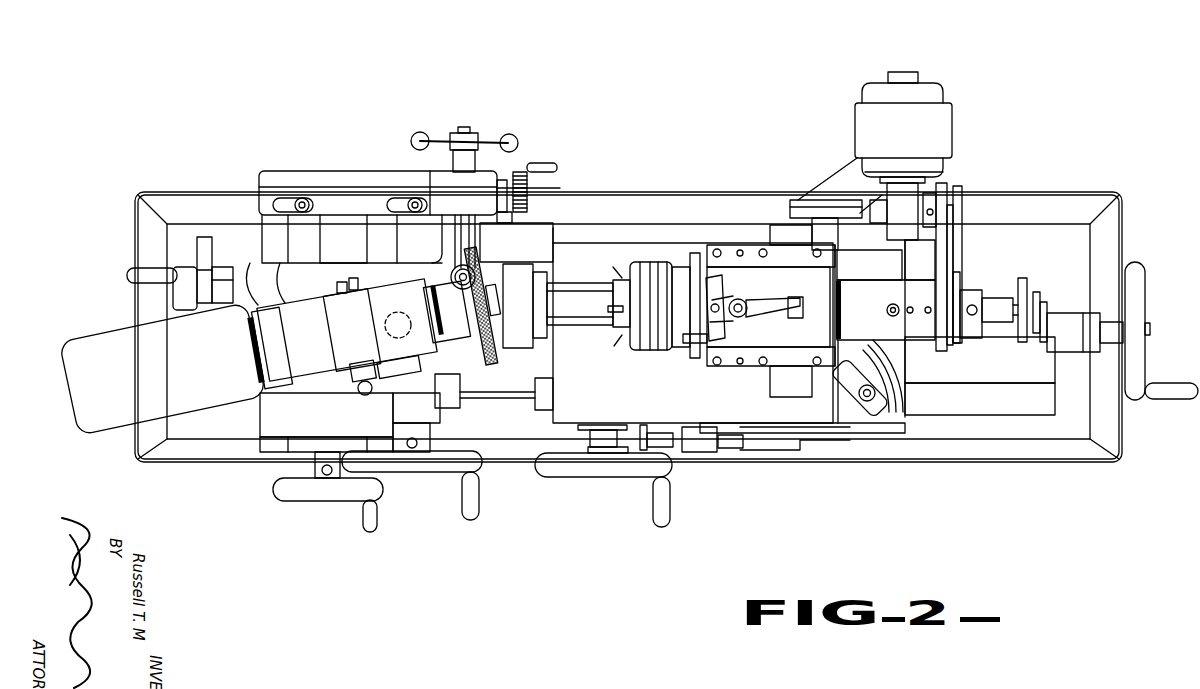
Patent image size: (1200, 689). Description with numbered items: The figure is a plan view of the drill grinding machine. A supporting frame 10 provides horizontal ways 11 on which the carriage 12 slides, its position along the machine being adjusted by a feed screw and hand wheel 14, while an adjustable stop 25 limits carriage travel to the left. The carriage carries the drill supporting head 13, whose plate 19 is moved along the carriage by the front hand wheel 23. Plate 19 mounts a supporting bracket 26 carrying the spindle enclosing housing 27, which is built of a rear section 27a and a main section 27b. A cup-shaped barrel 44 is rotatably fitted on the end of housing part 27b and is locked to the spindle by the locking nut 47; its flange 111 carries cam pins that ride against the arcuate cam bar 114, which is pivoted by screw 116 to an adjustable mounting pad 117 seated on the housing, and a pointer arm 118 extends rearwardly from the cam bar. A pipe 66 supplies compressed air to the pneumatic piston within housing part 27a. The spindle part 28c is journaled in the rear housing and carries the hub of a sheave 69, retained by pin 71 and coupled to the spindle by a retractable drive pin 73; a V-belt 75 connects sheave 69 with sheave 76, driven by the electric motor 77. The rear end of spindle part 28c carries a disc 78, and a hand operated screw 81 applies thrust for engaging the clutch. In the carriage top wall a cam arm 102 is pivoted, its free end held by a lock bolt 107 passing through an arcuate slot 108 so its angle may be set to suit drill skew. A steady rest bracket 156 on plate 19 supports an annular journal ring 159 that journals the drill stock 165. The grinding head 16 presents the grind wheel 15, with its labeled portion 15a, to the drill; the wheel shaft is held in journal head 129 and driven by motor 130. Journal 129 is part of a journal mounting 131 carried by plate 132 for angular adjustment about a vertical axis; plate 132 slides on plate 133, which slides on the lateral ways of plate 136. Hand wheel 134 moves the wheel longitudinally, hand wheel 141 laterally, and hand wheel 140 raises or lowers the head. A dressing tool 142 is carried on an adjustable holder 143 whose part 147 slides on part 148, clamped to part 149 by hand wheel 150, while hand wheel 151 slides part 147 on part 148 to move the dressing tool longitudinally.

The supporting frame 10 is at (1005, 418).
The horizontal ways 11 is at (950, 408).
The carriage 12 is at (888, 428).
The drill supporting head 13 is at (677, 362).
The hand wheel 14 is at (1140, 295).
The grind wheel 15 is at (487, 355).
The grinding wheel hub 15a is at (497, 360).
The grinding head 16 is at (304, 280).
The plate 19 is at (553, 415).
The hand wheel 23 is at (558, 466).
The adjustable stop 25 is at (727, 447).
The supporting bracket 26 is at (727, 363).
The spindle enclosing housing 27 is at (728, 270).
The rear section of housing 27a is at (863, 262).
The main section of housing 27b is at (818, 270).
The spindle part 28c is at (1007, 322).
The cup-shaped shell or barrel 44 is at (655, 262).
The locking nut 47 is at (628, 340).
The pipe 66 is at (882, 303).
The sheave 69 is at (950, 270).
The pin 71 is at (928, 313).
The retractable drive pin 73 is at (972, 310).
The V-belt 75 is at (943, 253).
The sheave 76 is at (960, 187).
The electric motor 77 is at (947, 100).
The disc 78 is at (1022, 290).
The hand operated screw 81 is at (1040, 293).
The cam arm 102 is at (867, 379).
The arcuate slot 108 is at (882, 367).
The lock bolt 107 is at (867, 400).
The flange 111 is at (697, 253).
The arcuate cam bar 114 is at (720, 332).
The screw 116 is at (717, 303).
The adjustable mounting pad 117 is at (783, 313).
The pointer arm 118 is at (770, 302).
The journal head 129 is at (313, 372).
The motor 130 is at (78, 337).
The journal mounting 131 is at (333, 272).
The plate 132 is at (252, 270).
The plate 133 is at (218, 285).
The hand wheel 134 is at (177, 300).
The plate 136 is at (256, 451).
The hand wheel 140 is at (437, 463).
The hand wheel 141 is at (302, 490).
The grind wheel dressing tool 142 is at (455, 272).
The adjustable holder 143 is at (533, 137).
The holder part 147 is at (485, 213).
The holder part 148 is at (433, 182).
The holder part 149 is at (447, 170).
The hand wheel 150 is at (483, 140).
The hand wheel 151 is at (535, 170).
The bracket 156 is at (598, 283).
The annular journal ring 159 is at (530, 342).
The drill stock 165 is at (563, 288).